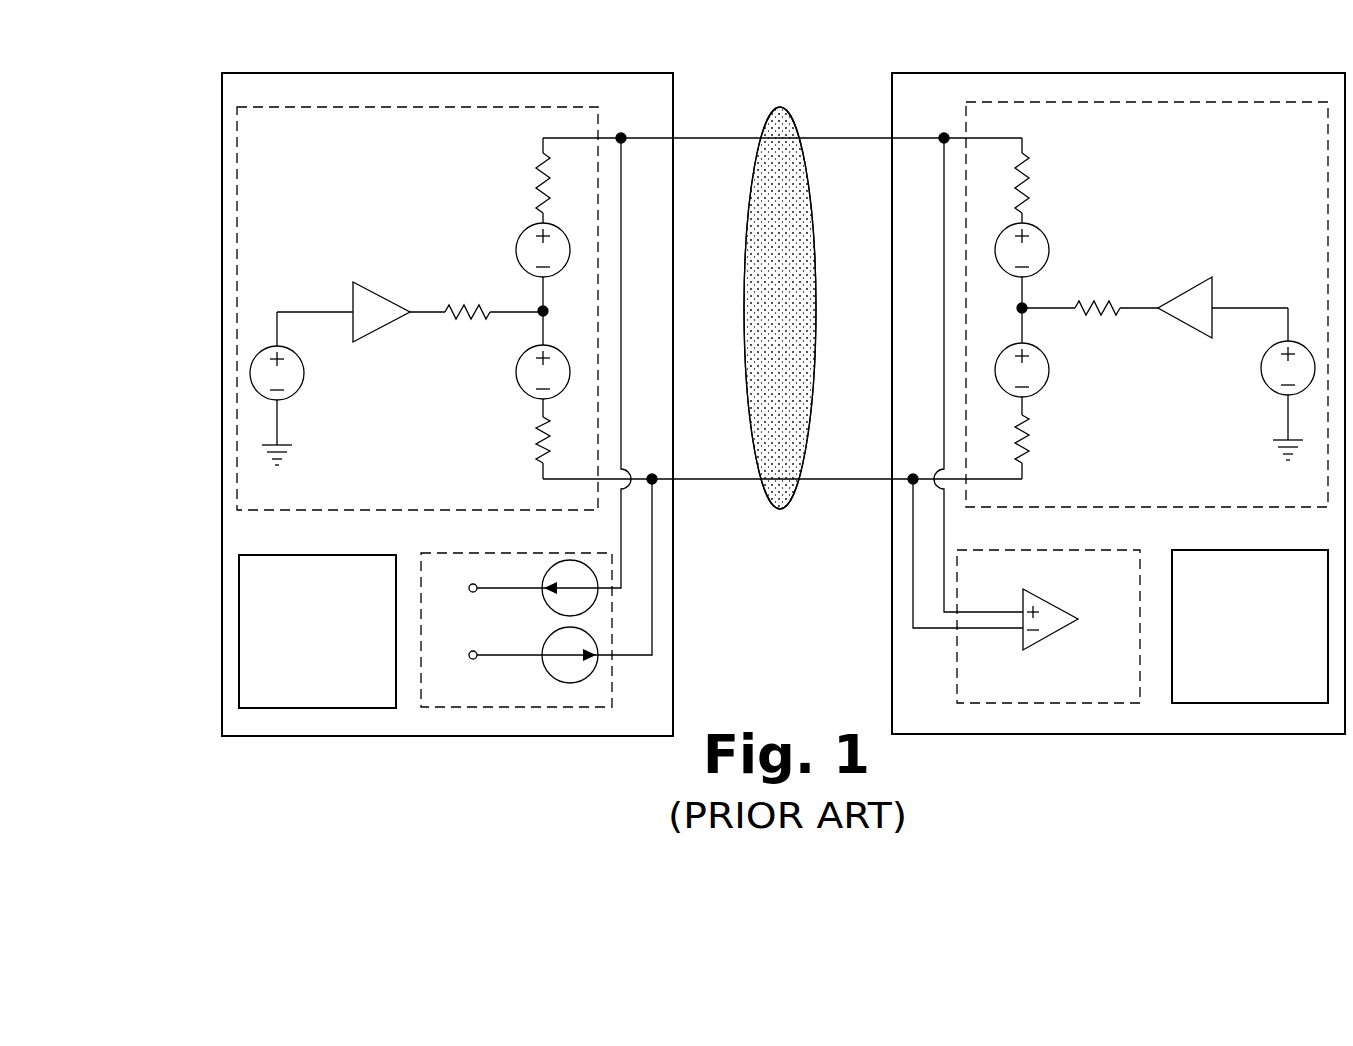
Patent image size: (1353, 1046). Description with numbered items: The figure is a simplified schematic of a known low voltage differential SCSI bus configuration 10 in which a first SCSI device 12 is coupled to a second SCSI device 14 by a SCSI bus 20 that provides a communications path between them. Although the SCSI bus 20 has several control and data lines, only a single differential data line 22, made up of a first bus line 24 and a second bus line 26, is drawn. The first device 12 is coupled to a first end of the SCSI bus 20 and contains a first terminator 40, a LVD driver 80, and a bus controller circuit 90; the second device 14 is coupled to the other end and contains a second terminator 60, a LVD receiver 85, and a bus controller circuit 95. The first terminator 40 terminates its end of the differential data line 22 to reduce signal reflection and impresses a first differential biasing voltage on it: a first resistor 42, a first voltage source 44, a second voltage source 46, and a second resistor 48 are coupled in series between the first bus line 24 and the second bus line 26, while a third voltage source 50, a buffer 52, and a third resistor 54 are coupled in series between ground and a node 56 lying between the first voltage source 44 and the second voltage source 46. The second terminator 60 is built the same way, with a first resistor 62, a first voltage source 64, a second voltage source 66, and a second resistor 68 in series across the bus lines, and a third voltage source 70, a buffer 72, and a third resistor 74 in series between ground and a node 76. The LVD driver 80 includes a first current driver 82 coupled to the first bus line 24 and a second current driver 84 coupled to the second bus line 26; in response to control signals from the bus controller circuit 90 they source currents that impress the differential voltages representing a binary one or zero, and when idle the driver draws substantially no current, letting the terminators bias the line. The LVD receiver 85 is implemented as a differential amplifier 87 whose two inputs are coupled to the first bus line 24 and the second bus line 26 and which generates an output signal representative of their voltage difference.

The LVD SCSI bus configuration 10 is at (860, 72).
The first SCSI device 12 is at (492, 73).
The second SCSI device 14 is at (1220, 73).
The SCSI bus 20 is at (785, 560).
The differential data line 22 is at (766, 494).
The first bus line 24 is at (705, 138).
The second bus line 26 is at (703, 479).
The first terminator 40 is at (333, 512).
The first resistor 42 is at (547, 170).
The first voltage source 44 is at (553, 224).
The second voltage source 46 is at (553, 346).
The second resistor 48 is at (548, 444).
The third voltage source 50 is at (296, 394).
The buffer 52 is at (350, 288).
The third resistor 54 is at (447, 306).
The node 56 is at (540, 307).
The second terminator 60 is at (1150, 510).
The first resistor 62 is at (1017, 170).
The first voltage source 64 is at (1010, 226).
The second voltage source 66 is at (1013, 345).
The second resistor 68 is at (1016, 444).
The third voltage source 70 is at (1270, 392).
The buffer 72 is at (1212, 287).
The third resistor 74 is at (1110, 302).
The node 76 is at (1025, 304).
The LVD driver 80 is at (612, 682).
The first current driver 82 is at (545, 575).
The second current driver 84 is at (545, 668).
The LVD receiver 85 is at (957, 680).
The differential amplifier 87 is at (1044, 598).
The bus controller circuit 90 is at (330, 555).
The bus controller circuit 95 is at (1200, 550).